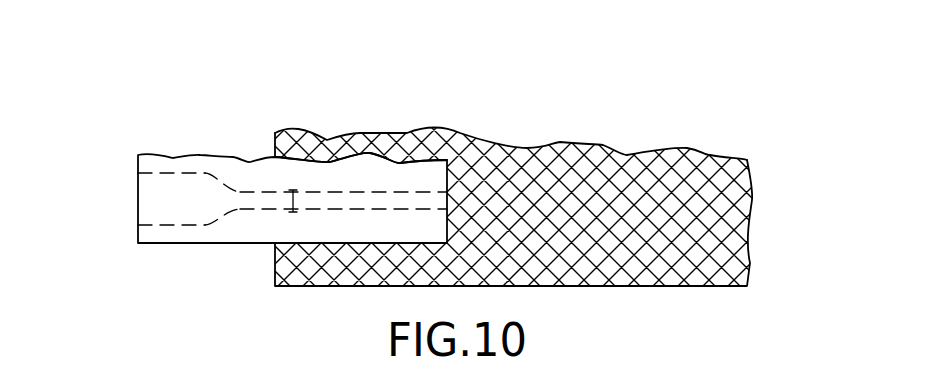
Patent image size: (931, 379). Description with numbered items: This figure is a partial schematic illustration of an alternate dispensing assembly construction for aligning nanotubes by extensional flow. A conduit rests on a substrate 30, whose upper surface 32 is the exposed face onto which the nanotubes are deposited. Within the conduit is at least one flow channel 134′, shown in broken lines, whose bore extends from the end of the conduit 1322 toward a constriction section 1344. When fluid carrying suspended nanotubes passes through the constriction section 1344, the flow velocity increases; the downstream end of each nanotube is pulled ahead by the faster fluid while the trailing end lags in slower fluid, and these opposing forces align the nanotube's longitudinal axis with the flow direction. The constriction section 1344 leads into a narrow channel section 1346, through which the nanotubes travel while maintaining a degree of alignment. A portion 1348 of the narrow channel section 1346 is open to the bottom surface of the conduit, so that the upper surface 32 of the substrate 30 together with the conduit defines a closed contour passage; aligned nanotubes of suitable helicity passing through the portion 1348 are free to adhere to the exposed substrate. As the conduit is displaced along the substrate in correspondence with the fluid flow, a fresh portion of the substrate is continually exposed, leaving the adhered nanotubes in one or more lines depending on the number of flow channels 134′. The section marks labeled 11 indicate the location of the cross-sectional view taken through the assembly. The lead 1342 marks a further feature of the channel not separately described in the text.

The substrate 30 is at (707, 288).
The upper surface 32 is at (588, 165).
The end of the conduit 1322 is at (138, 217).
The first channel wall 1342 is at (160, 198).
The flow channel 134′ is at (203, 174).
The constriction section 1344 is at (220, 203).
The narrow channel section 1346 is at (297, 180).
The portion of the narrow channel section 1348 is at (328, 200).
The section line for FIG. 11 is at (113, 200).